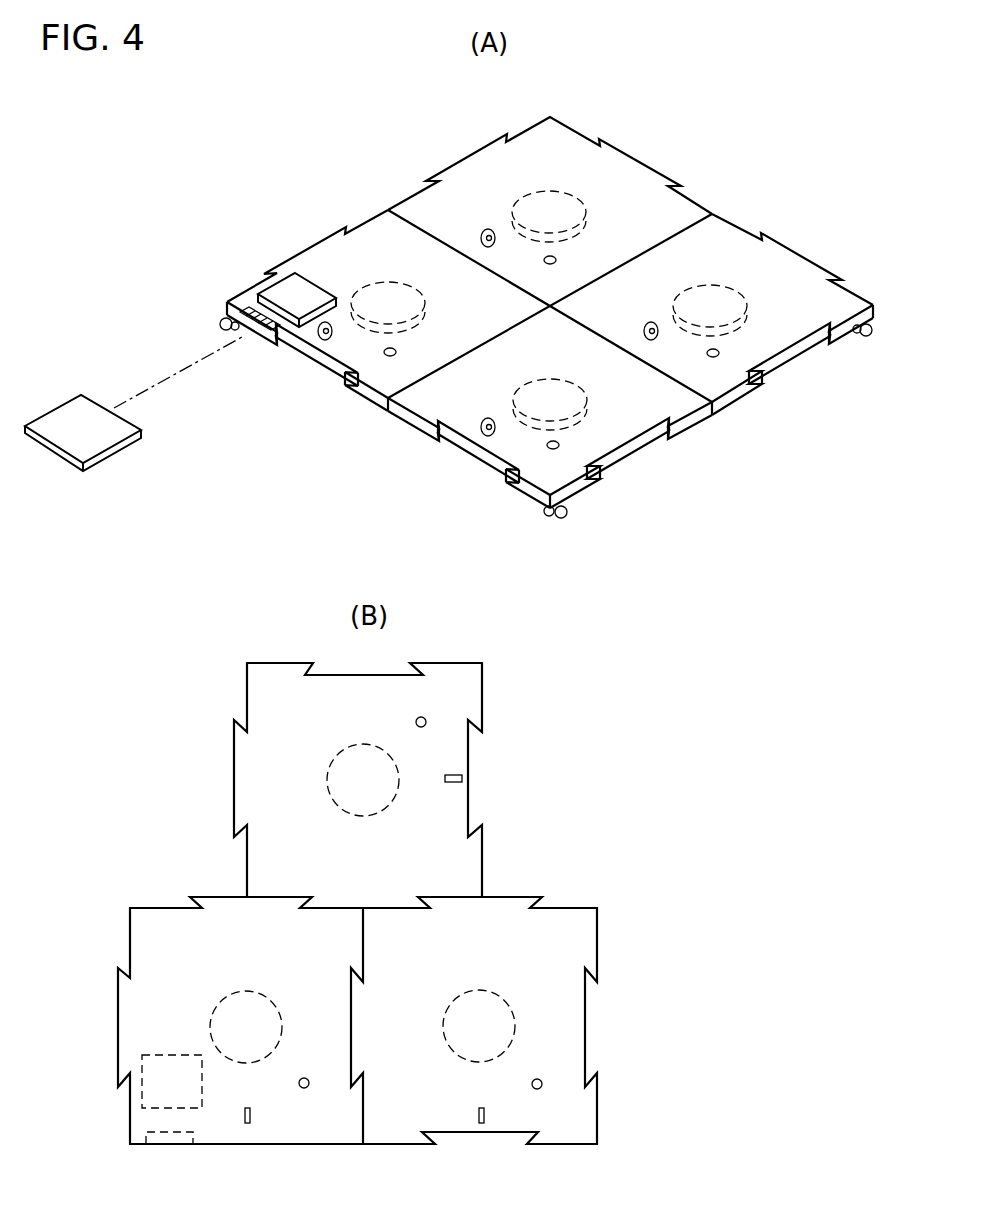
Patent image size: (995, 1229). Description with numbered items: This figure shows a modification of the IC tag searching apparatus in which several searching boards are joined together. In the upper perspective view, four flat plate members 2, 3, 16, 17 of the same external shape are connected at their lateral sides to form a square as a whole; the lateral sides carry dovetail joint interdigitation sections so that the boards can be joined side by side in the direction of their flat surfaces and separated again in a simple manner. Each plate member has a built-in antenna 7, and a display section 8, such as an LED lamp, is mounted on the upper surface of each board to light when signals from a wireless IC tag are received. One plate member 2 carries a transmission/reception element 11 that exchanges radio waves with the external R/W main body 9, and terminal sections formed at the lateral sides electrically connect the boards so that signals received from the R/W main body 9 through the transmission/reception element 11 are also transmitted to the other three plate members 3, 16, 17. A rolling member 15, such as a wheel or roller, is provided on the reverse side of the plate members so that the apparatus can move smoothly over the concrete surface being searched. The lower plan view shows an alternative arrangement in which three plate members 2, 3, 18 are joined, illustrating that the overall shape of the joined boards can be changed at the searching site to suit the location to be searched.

The flat plate member 2 is at (383, 228).
The flat plate member 3 is at (612, 420).
The antenna 7 is at (372, 312).
The display section 8 is at (388, 357).
The R/W main body 9 is at (100, 440).
The transmission/reception element 11 is at (283, 302).
The rolling member 15 is at (565, 515).
The plate member 16 is at (565, 152).
The plate member 17 is at (770, 258).
The plate member 18 is at (268, 708).